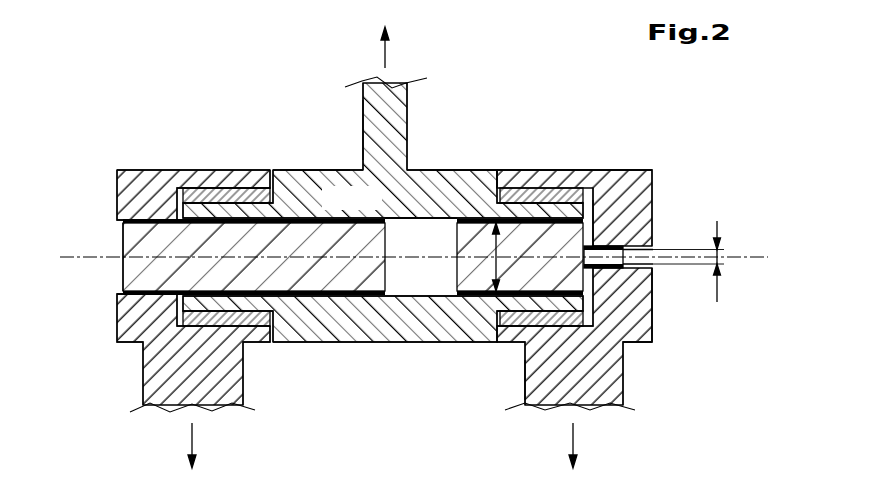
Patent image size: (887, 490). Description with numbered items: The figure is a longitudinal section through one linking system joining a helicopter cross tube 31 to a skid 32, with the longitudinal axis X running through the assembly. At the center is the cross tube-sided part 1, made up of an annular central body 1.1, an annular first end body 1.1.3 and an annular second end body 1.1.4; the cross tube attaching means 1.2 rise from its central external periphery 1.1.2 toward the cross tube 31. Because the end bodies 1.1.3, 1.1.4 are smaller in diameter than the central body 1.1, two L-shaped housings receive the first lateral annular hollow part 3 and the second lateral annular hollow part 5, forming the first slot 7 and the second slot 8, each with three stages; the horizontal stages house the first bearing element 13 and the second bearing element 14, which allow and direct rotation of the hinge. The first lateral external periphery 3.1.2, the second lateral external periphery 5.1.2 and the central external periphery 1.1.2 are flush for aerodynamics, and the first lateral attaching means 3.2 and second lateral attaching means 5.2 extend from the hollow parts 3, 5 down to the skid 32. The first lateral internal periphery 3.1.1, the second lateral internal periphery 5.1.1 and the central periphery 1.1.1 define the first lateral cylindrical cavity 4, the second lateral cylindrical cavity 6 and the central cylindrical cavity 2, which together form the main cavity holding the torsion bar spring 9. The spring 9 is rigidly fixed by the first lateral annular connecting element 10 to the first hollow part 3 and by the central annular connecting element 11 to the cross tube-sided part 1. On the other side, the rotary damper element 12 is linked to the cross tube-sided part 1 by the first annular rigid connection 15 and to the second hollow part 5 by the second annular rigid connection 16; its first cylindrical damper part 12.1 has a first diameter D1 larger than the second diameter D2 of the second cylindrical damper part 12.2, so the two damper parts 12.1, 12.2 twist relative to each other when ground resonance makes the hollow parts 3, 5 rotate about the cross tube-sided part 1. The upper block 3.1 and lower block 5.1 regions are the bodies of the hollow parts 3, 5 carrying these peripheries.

The cross tube-sided part 1 is at (405, 200).
The annular central body 1.1 is at (449, 190).
The central external periphery 1.1.1 is at (420, 226).
The central external periphery 1.1.2 is at (328, 180).
The annular first end body 1.1.3 is at (229, 192).
The annular second end body 1.1.4 is at (567, 196).
The cross tube attaching means 1.2 is at (362, 108).
The central cylindrical cavity 2 is at (417, 280).
The first lateral annular hollow part 3 is at (149, 244).
The first housing upper block 3.1 is at (149, 148).
The first lateral internal periphery 3.1.1 is at (138, 198).
The first lateral external periphery 3.1.2 is at (157, 170).
The first lateral attaching means 3.2 is at (157, 372).
The first lateral cylindrical cavity 4 is at (120, 253).
The second lateral annular hollow part 5 is at (626, 279).
The second housing lower block 5.1 is at (636, 332).
The second lateral internal periphery 5.1.1 is at (653, 311).
The second lateral external periphery 5.1.2 is at (605, 170).
The second lateral attaching means 5.2 is at (597, 385).
The second lateral cylindrical cavity 6 is at (623, 257).
The first slot 7 is at (177, 170).
The second slot 8 is at (595, 237).
The torsion bar spring 9 is at (320, 257).
The first lateral annular connecting element 10 is at (133, 300).
The central annular connecting element 11 is at (367, 293).
The rotary damper element 12 is at (524, 346).
The first cylindrical damper part 12.1 is at (597, 213).
The second cylindrical damper part 12.2 is at (643, 332).
The first bearing element 13 is at (249, 198).
The second bearing element 14 is at (546, 197).
The first annular rigid connection 15 is at (515, 214).
The second annular rigid connection 16 is at (625, 243).
The cross tube 31 is at (384, 246).
The skid 32 is at (383, 456).
The first diameter D1 is at (511, 257).
The second diameter D2 is at (702, 264).
The axis X is at (759, 257).